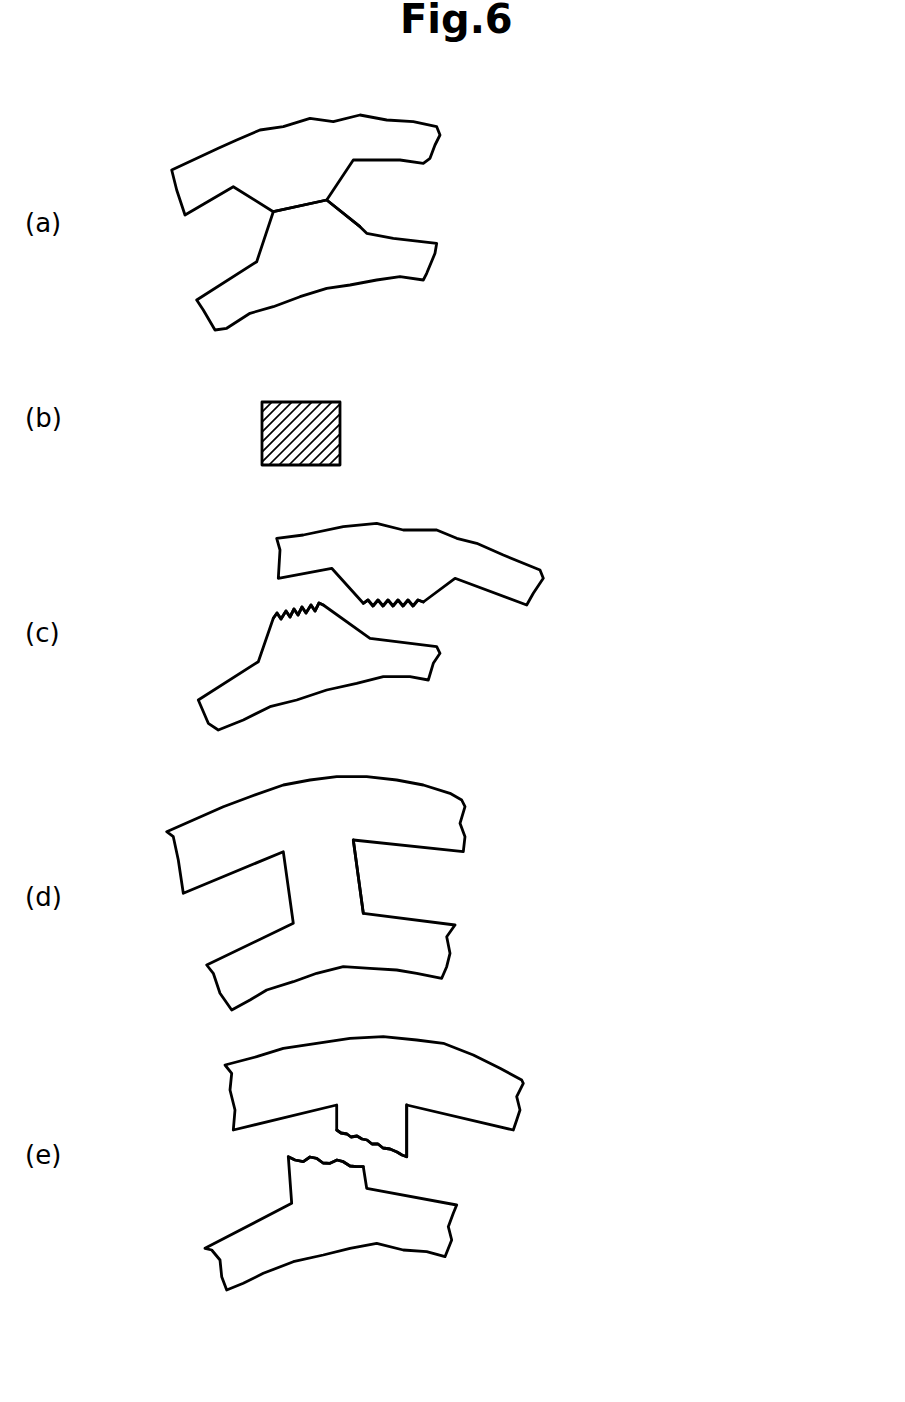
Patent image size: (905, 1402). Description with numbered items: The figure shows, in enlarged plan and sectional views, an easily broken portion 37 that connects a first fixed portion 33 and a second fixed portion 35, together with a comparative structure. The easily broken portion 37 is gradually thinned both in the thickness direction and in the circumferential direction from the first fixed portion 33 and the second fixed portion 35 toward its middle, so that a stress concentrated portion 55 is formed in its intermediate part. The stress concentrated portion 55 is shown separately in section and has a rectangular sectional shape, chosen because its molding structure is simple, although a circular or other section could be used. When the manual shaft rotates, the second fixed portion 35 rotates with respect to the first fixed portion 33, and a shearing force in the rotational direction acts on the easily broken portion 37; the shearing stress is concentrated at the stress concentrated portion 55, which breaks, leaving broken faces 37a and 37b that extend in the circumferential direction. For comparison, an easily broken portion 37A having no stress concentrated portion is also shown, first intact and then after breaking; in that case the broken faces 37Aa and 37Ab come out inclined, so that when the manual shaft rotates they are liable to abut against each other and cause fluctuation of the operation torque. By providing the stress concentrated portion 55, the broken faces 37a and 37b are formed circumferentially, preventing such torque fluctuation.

The first fixed portion 33 is at (262, 150).
The second fixed portion 35 is at (367, 267).
The stress concentrated portion 55 is at (330, 200).
The easily broken portion 37 is at (362, 226).
The broken face 37a is at (397, 607).
The broken face 37b is at (290, 607).
The easily broken portion 37A is at (365, 880).
The broken face 37Aa is at (383, 1157).
The broken face 37Ab is at (310, 1158).